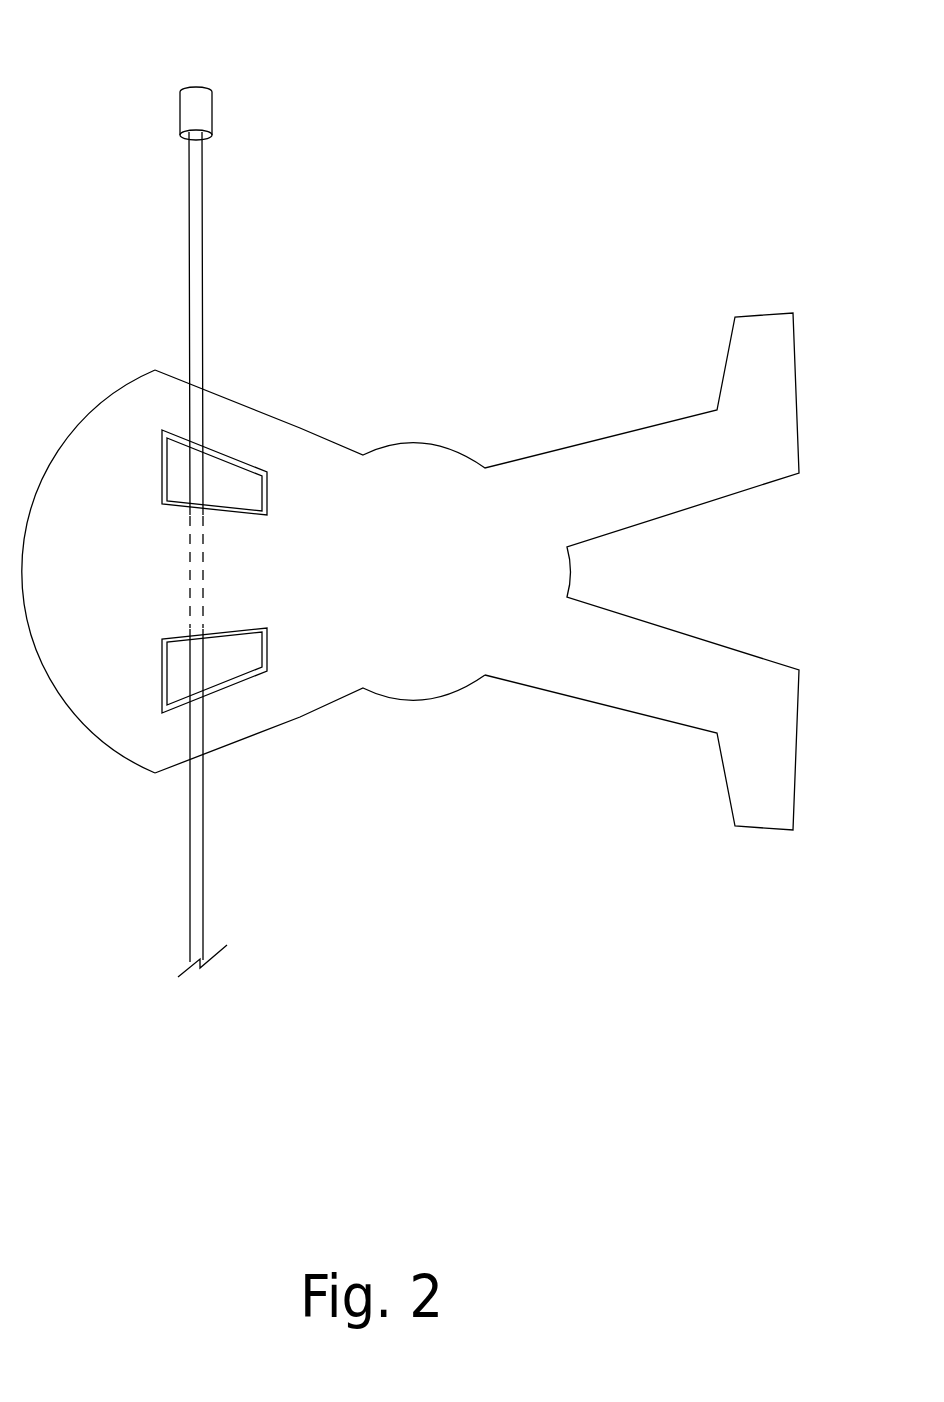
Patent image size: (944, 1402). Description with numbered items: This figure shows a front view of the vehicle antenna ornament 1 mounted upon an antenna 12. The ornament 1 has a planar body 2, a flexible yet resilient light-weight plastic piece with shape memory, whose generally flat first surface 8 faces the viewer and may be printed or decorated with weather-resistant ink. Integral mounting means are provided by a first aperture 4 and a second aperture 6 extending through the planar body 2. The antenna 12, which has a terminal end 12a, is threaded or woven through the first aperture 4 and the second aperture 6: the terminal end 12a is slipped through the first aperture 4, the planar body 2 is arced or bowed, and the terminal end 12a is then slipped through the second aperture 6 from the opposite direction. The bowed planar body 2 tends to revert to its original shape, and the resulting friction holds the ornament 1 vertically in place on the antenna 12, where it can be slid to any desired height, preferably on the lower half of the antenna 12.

The vehicle antenna ornament 1 is at (542, 163).
The planar body 2 is at (305, 428).
The first aperture 4 is at (237, 475).
The second aperture 6 is at (223, 663).
The first surface 8 is at (410, 615).
The antenna 12 is at (202, 230).
The terminal end 12a is at (212, 90).